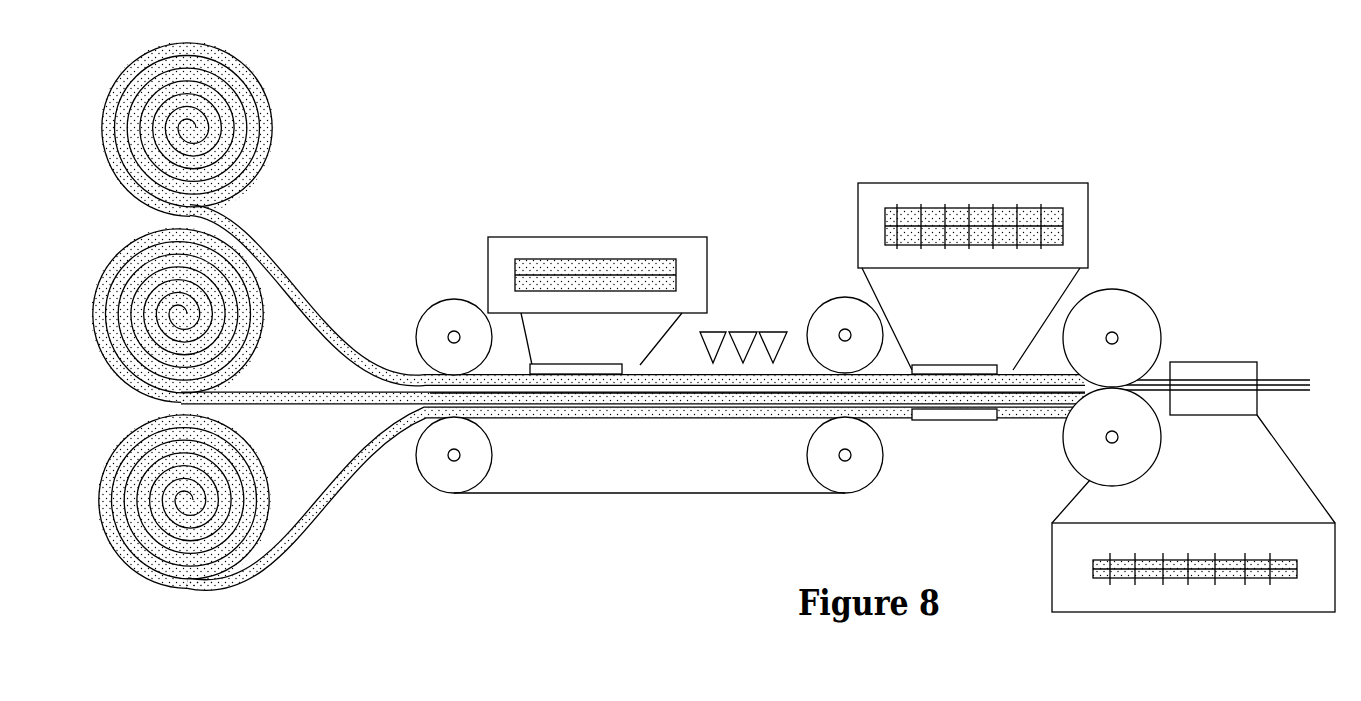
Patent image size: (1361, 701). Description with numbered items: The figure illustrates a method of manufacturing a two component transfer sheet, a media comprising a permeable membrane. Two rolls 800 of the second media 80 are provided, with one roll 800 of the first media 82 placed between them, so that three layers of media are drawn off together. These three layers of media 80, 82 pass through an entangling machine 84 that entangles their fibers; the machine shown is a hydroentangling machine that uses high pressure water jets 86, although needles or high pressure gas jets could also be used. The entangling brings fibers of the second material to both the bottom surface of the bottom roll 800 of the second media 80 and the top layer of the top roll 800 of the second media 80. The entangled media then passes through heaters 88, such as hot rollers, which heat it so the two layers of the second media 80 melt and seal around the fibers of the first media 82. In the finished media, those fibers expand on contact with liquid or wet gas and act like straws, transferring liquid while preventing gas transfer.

The roll 800 is at (268, 85).
The second media 80 is at (310, 302).
The first media 82 is at (300, 405).
The entangling machine 84 is at (725, 285).
The high pressure water jets 86 is at (754, 318).
The heaters 88 is at (1138, 310).